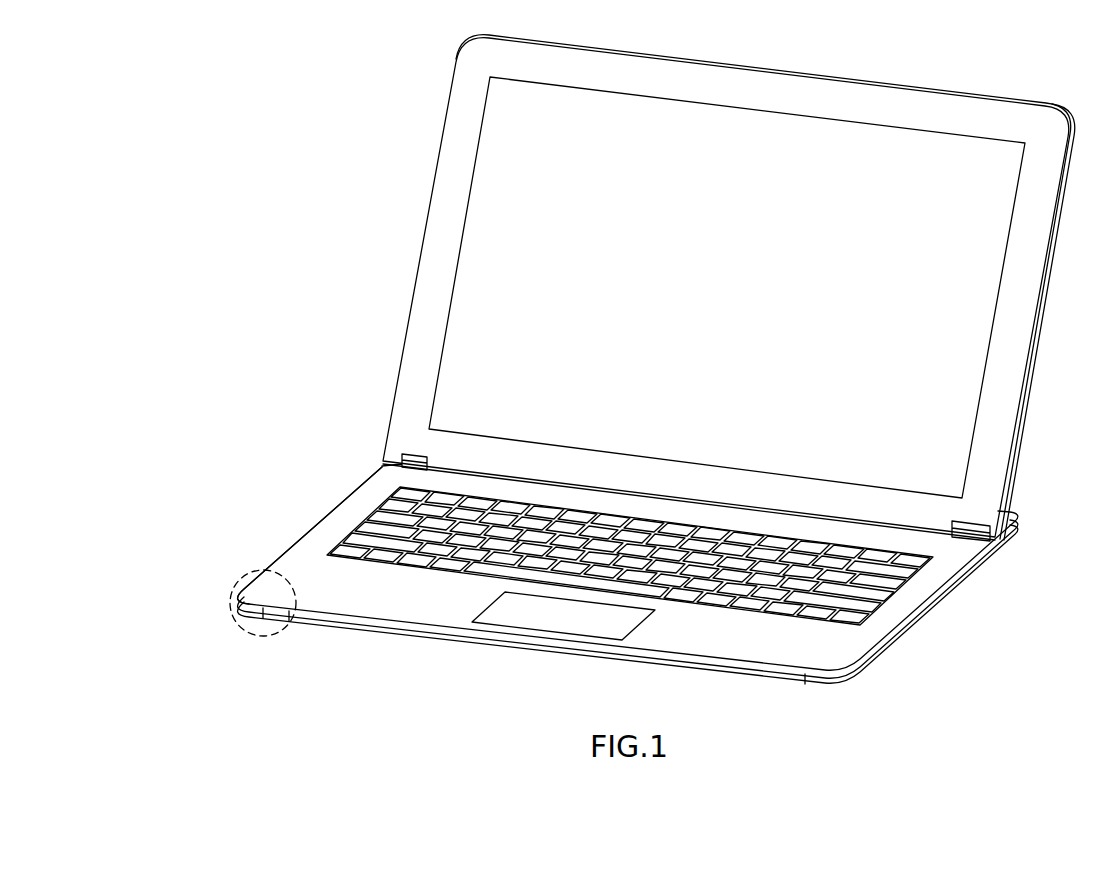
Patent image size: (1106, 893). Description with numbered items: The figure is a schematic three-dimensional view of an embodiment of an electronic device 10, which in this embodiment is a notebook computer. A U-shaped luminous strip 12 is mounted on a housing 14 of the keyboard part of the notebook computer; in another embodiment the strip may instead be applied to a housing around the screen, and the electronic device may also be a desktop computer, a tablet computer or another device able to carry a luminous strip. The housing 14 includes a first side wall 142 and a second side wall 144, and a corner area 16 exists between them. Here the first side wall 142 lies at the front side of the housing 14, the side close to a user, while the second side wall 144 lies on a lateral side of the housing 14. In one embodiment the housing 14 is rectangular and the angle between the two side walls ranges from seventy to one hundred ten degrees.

The electronic device 10 is at (621, 363).
The U-shaped luminous strip 12 is at (406, 638).
The housing 14 is at (923, 592).
The first side wall 142 is at (307, 535).
The second side wall 144 is at (348, 620).
The corner area 16 is at (231, 597).